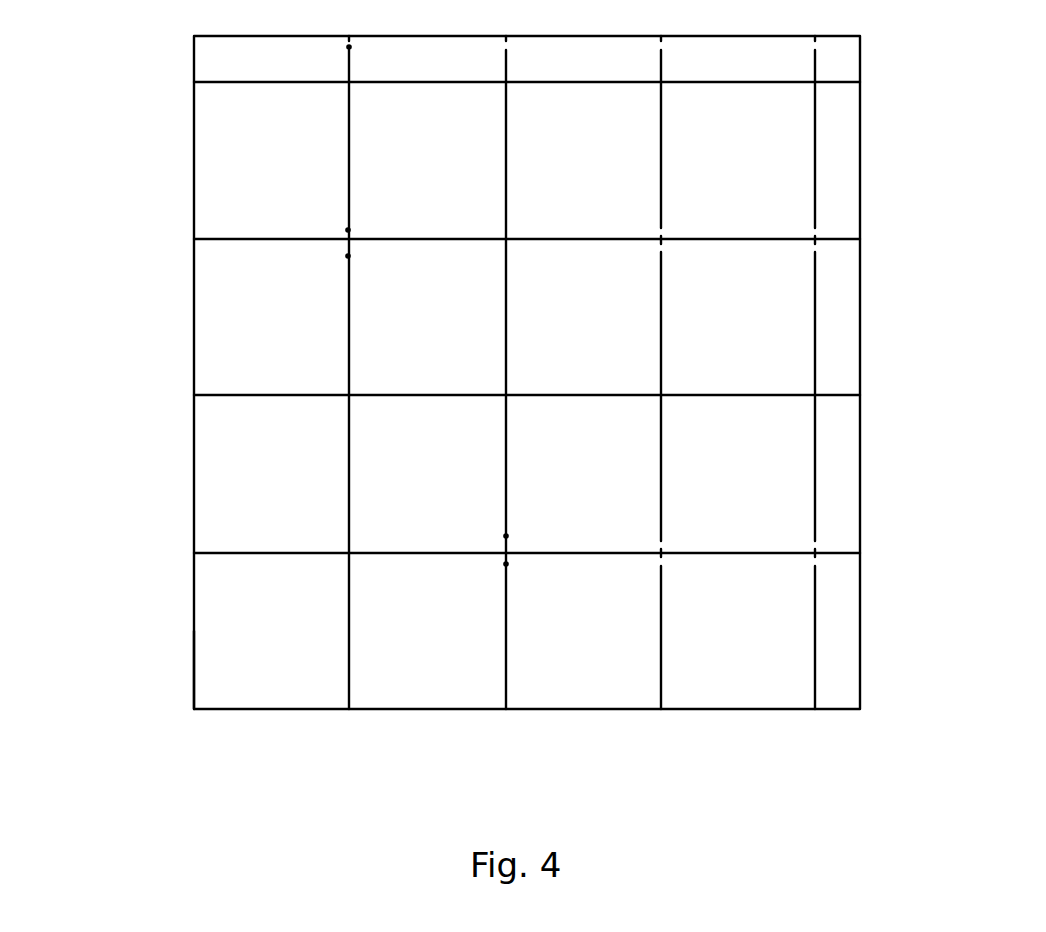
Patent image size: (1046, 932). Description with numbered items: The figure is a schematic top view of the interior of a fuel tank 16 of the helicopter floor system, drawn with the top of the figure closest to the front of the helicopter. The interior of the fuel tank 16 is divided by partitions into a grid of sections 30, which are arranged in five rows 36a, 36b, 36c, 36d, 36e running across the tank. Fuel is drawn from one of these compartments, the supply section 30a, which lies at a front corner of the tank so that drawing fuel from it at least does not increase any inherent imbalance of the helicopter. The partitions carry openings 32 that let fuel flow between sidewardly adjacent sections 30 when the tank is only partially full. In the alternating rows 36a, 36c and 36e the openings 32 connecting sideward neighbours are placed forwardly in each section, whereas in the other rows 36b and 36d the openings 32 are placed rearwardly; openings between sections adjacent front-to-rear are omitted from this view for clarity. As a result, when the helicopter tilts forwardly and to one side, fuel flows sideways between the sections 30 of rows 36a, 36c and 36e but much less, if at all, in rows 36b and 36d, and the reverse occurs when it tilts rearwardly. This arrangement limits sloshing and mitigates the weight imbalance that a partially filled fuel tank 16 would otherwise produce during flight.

The fuel tank 16 is at (502, 439).
The sections 30 is at (770, 193).
The supply section 30a is at (847, 68).
The openings 32 is at (349, 47).
The row 36a is at (160, 67).
The row 36b is at (160, 166).
The row 36c is at (158, 316).
The row 36d is at (150, 475).
The row 36e is at (156, 623).